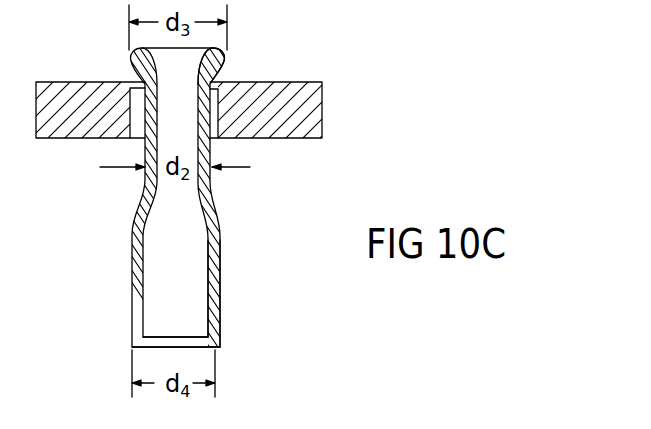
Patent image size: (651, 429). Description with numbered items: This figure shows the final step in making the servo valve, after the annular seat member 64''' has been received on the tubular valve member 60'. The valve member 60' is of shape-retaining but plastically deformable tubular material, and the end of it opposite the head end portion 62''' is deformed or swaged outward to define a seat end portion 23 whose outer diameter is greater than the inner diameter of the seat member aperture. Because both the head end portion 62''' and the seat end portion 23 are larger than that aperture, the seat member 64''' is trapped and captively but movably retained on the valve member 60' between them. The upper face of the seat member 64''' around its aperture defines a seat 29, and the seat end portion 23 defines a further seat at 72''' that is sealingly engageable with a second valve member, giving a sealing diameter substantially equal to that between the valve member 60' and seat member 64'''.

The seat 29 is at (133, 80).
The head end portion 62''' is at (250, 63).
The seat member 64''' is at (193, 110).
The valve member 60' is at (210, 214).
The seat end portion 23 is at (220, 275).
The seat 72''' is at (224, 342).